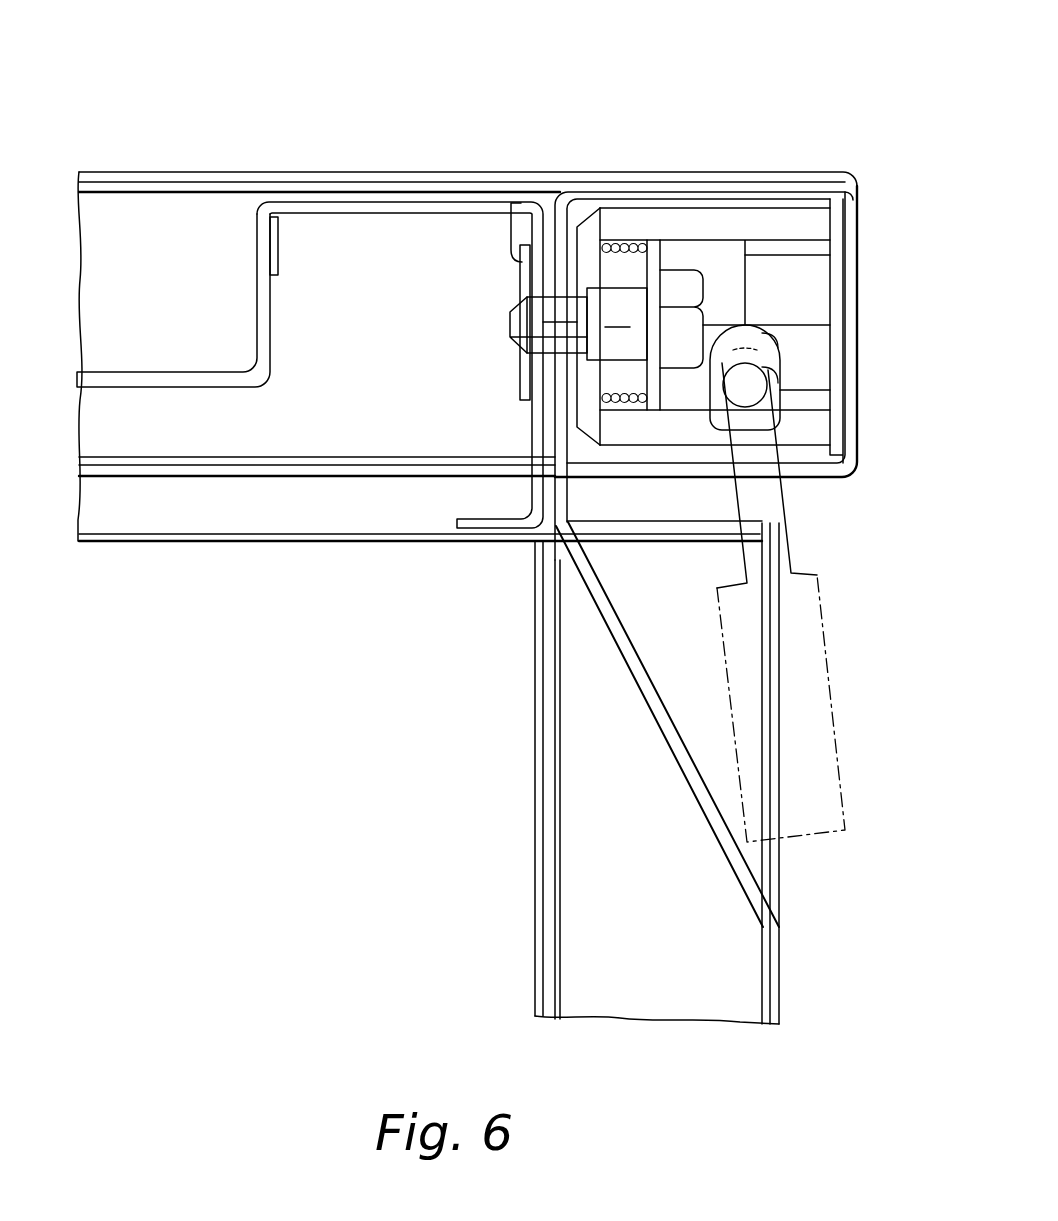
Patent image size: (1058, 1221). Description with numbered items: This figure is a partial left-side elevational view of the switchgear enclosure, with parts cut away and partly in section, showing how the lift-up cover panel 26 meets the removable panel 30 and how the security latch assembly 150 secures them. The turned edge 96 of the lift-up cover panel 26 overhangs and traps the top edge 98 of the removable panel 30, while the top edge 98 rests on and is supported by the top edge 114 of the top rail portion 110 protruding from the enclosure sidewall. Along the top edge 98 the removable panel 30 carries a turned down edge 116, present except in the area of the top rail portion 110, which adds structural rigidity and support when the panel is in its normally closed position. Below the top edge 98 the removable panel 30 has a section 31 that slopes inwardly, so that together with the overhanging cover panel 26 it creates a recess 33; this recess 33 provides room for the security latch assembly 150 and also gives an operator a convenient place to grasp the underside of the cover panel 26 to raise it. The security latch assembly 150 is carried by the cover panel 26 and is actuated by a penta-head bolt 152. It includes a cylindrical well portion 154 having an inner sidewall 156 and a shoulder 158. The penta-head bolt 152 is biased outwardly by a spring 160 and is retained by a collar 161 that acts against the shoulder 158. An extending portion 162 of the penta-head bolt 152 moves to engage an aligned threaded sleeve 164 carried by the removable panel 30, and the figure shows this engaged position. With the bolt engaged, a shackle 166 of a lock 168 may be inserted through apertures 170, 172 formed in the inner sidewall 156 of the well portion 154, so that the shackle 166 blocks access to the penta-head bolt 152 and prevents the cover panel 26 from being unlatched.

The lift-up cover panel 26 is at (223, 173).
The removable panel 30 is at (686, 775).
The section 31 is at (653, 674).
The recess 33 is at (677, 615).
The turned edge 96 is at (856, 472).
The top edge 98 is at (568, 202).
The top rail portion 110 is at (254, 313).
The top edge 114 is at (428, 208).
The turned down edge 116 is at (278, 250).
The security latch assembly 150 is at (865, 261).
The penta-head bolt 152 is at (697, 270).
The cylindrical well portion 154 is at (729, 254).
The inner sidewall 156 is at (677, 252).
The shoulder 158 is at (793, 265).
The spring 160 is at (618, 247).
The collar 161 is at (653, 242).
The extending portion 162 is at (510, 338).
The threaded sleeve 164 is at (508, 212).
The shackle 166 is at (785, 505).
The lock 168 is at (838, 700).
The aperture 170 is at (773, 350).
The aperture 172 is at (780, 383).